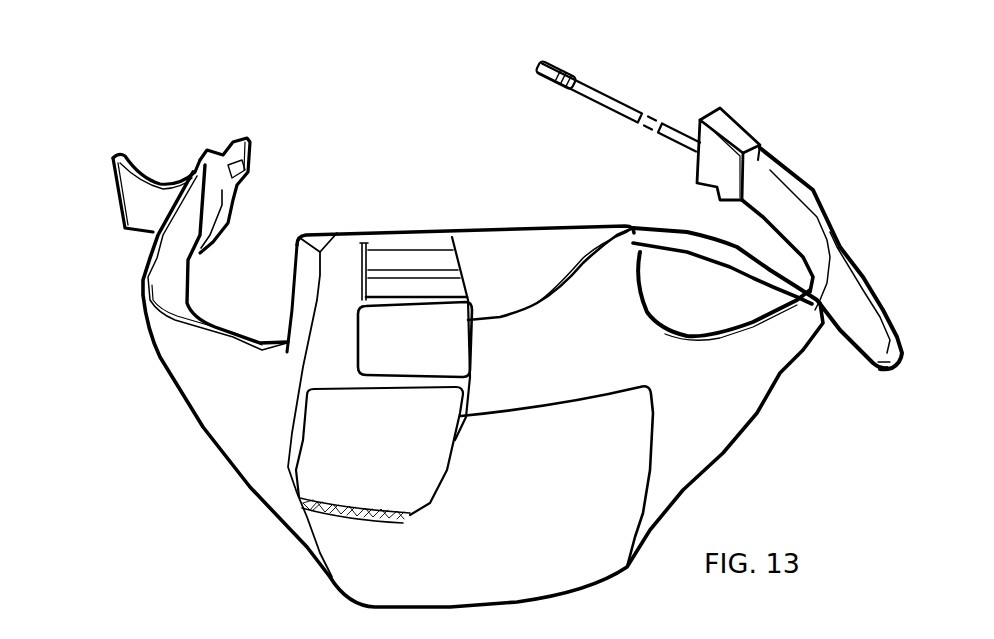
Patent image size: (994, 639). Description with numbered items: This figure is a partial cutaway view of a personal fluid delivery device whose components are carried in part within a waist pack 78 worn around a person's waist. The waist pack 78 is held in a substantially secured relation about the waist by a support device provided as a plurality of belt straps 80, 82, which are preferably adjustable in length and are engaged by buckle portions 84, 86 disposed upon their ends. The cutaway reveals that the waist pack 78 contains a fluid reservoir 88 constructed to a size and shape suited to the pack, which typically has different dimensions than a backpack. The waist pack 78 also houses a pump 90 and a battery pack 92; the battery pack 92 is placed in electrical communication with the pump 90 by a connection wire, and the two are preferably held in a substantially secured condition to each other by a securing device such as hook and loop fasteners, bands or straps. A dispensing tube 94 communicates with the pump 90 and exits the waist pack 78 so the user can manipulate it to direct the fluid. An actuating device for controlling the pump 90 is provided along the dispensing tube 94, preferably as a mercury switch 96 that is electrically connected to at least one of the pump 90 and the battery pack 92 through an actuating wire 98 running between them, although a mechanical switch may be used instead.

The waist pack 78 is at (216, 409).
The belt strap 80 is at (147, 253).
The belt strap 82 is at (813, 194).
The buckle portion 84 is at (250, 138).
The buckle portion 86 is at (695, 170).
The fluid reservoir 88 is at (340, 461).
The pump 90 is at (378, 347).
The battery pack 92 is at (363, 267).
The dispensing tube 94 is at (618, 90).
The mercury switch 96 is at (575, 79).
The actuating wire 98 is at (890, 318).